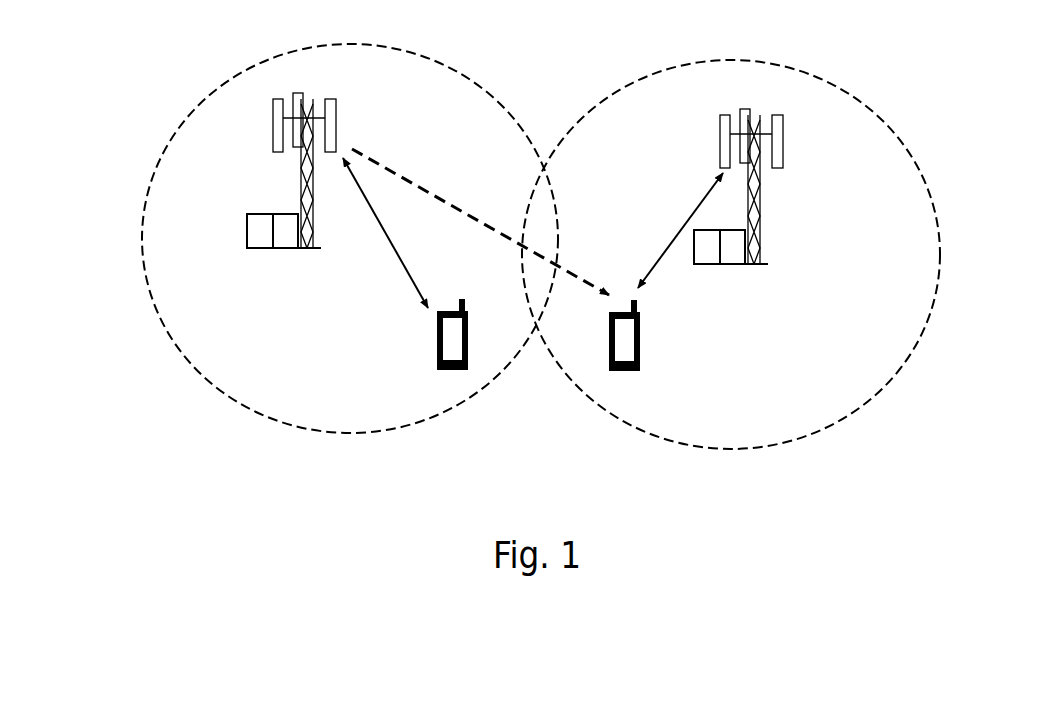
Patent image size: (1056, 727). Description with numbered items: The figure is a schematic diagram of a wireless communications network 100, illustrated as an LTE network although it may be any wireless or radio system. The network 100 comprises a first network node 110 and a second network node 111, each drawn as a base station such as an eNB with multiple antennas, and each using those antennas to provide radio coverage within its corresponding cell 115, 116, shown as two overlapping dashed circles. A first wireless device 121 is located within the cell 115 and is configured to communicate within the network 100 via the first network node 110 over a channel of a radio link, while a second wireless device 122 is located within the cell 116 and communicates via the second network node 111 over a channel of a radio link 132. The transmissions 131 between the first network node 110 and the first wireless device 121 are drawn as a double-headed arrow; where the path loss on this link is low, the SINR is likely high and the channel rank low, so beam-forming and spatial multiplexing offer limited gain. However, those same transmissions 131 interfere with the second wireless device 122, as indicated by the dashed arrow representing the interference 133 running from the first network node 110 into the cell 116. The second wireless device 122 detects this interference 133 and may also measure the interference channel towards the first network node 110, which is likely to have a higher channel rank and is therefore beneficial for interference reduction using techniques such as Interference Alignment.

The wireless communications network 100 is at (815, 477).
The first network node 110 is at (330, 103).
The second network node 111 is at (777, 119).
The cell 115 is at (168, 331).
The cell 116 is at (920, 342).
The first wireless device 121 is at (437, 320).
The second wireless device 122 is at (640, 321).
The transmissions 131 is at (382, 233).
The second wireless link 132 is at (692, 212).
The interference 133 is at (450, 205).